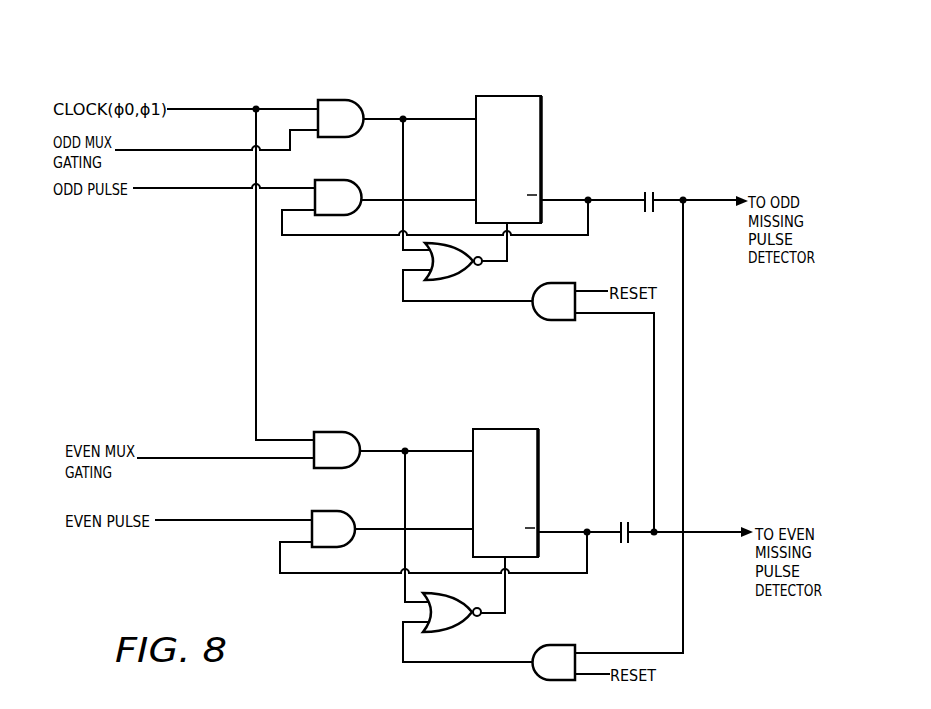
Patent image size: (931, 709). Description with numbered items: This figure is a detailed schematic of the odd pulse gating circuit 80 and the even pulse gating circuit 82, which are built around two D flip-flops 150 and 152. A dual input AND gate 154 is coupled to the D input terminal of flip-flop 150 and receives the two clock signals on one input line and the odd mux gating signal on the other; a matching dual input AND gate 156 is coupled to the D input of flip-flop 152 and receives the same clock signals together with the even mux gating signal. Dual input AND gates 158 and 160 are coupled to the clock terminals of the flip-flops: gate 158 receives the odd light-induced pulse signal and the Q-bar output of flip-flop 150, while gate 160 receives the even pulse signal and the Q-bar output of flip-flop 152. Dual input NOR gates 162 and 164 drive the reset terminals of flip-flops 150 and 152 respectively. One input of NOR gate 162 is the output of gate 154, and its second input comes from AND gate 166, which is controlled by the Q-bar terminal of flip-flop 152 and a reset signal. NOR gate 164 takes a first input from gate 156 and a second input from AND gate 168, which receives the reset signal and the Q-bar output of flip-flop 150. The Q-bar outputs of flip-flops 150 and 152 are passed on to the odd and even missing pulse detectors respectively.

The odd pulse gating circuit 80 is at (419, 98).
The even pulse gating circuit 82 is at (343, 607).
The D flip-flop 150 is at (515, 96).
The D flip-flop 152 is at (512, 429).
The dual input AND gate 154 is at (348, 100).
The dual input AND gate 156 is at (347, 432).
The dual input AND gate 158 is at (340, 180).
The dual input AND gate 160 is at (333, 511).
The dual input NOR gate 162 is at (460, 280).
The dual input NOR gate 164 is at (458, 632).
The dual input AND gate 166 is at (553, 283).
The dual input AND gate 168 is at (553, 645).